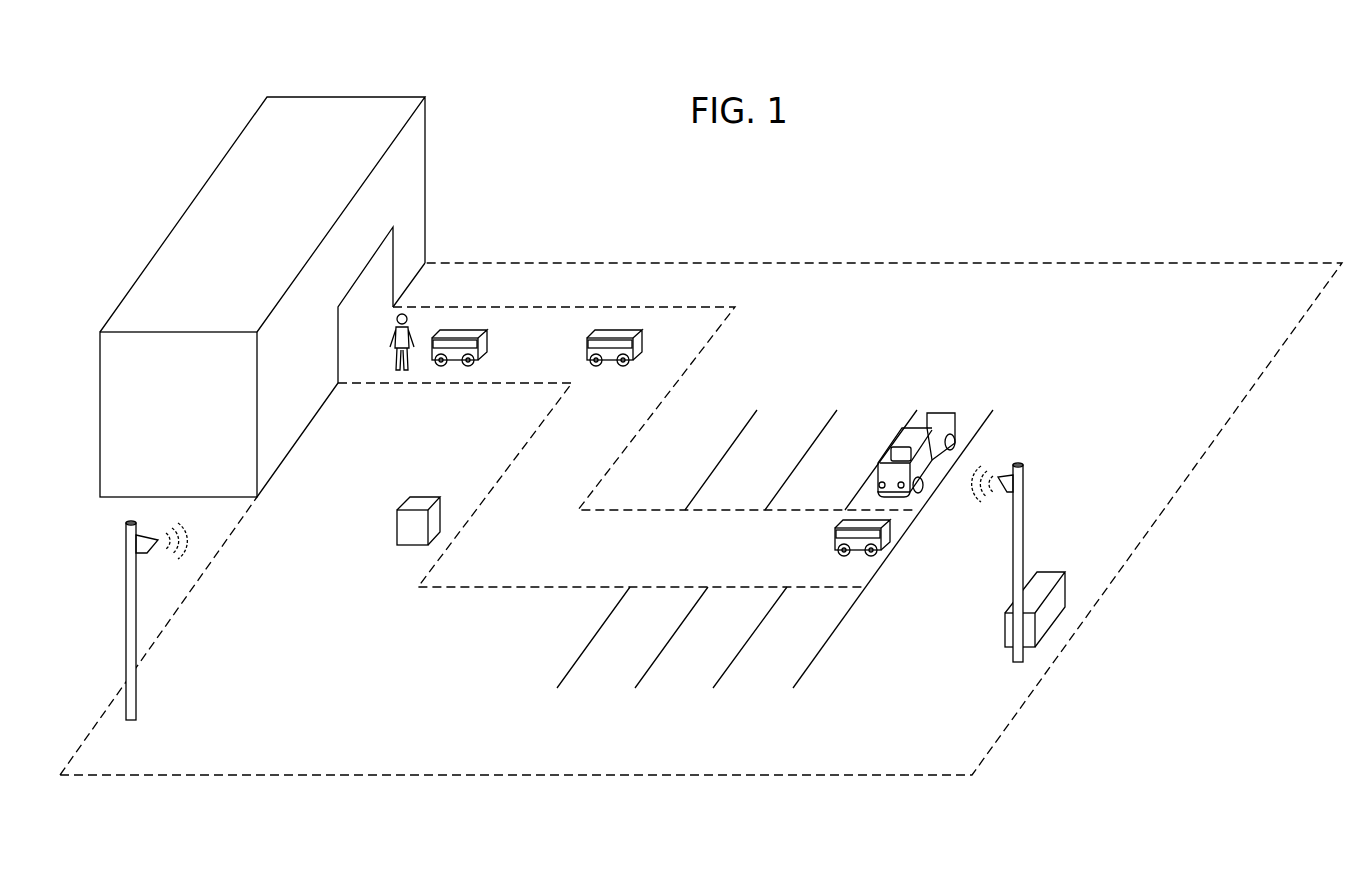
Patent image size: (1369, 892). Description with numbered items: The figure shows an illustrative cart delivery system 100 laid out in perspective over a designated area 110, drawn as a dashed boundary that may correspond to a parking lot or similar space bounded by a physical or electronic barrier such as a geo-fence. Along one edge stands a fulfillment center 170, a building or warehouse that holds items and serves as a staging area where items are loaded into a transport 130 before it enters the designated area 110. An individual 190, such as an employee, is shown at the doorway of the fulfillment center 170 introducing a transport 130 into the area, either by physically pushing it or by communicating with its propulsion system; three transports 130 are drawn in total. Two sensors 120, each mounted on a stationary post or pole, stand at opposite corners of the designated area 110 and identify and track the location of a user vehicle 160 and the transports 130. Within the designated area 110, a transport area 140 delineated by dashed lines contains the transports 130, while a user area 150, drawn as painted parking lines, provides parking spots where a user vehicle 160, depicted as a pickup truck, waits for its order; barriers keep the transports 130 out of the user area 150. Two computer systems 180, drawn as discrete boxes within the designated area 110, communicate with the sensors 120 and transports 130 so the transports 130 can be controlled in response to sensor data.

The cart delivery system 100 is at (958, 203).
The designated area 110 is at (1230, 297).
The sensor 120 is at (133, 585).
The transport 130 is at (488, 343).
The transport area 140 is at (547, 572).
The user area 150 is at (1000, 398).
The user vehicle 160 is at (957, 427).
The fulfillment center 170 is at (425, 183).
The computer system 180 is at (397, 530).
The individual 190 is at (407, 328).